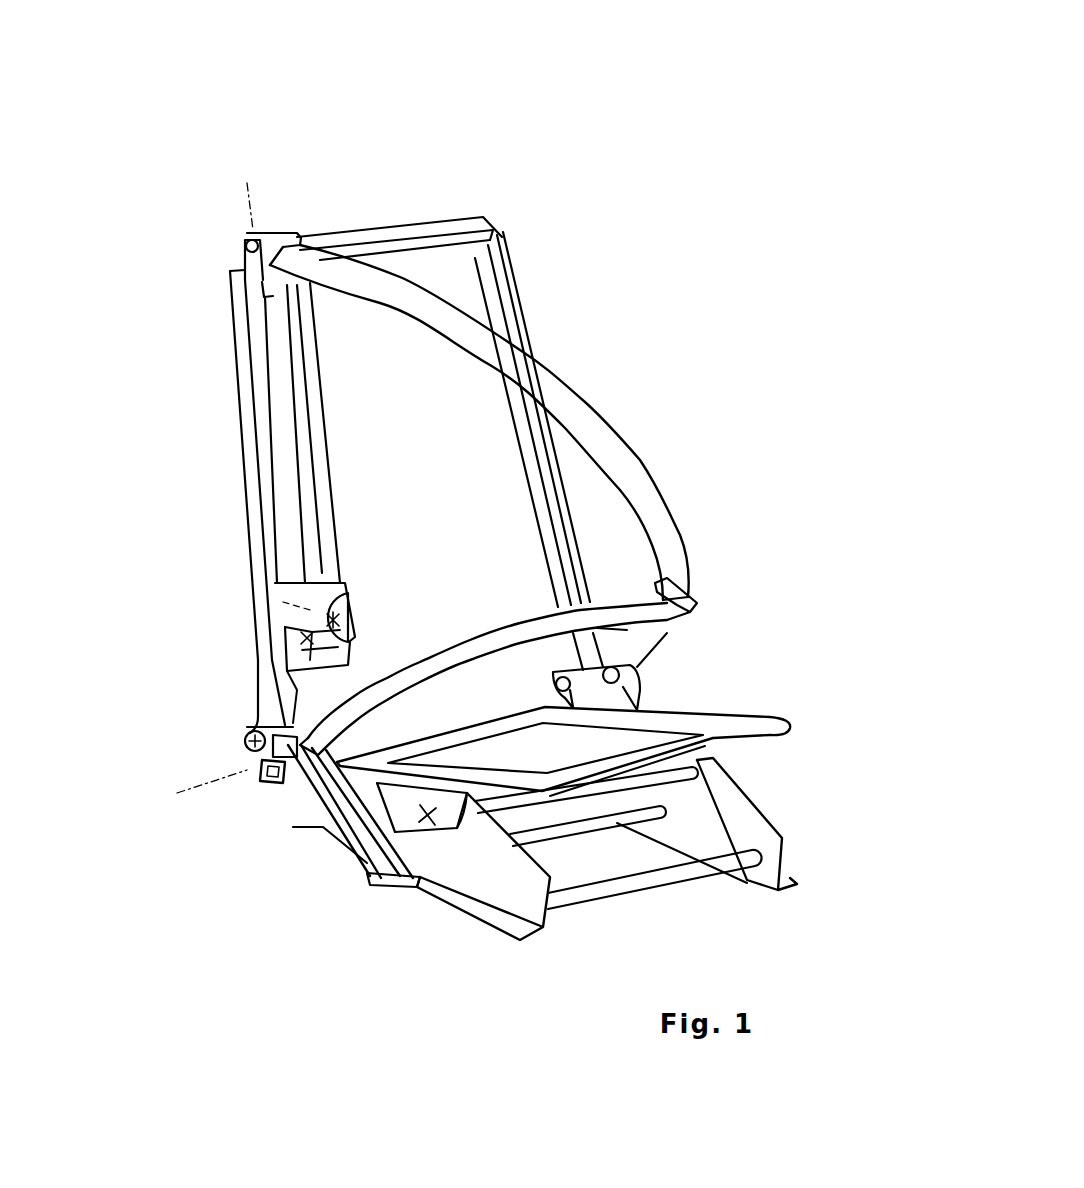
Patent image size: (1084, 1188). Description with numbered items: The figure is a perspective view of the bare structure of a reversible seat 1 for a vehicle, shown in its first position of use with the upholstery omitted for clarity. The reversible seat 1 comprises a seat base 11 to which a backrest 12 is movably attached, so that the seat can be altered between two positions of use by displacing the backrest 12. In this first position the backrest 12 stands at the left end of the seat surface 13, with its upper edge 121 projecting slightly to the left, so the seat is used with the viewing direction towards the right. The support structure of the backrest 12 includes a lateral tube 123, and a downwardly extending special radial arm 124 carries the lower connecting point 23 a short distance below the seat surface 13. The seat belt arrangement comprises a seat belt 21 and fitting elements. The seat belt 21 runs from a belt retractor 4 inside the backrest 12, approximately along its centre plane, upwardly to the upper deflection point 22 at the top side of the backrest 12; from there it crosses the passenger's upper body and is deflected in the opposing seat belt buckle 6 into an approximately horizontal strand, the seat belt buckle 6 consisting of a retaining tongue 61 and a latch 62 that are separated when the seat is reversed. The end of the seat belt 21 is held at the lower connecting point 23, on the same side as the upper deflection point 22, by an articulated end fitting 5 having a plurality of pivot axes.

The reversible seat 1 is at (245, 88).
The seat base 11 is at (782, 814).
The backrest 12 is at (545, 299).
The seat surface 13 is at (767, 728).
The upper edge 121 is at (422, 230).
The lateral tube 123 is at (245, 417).
The radial arm 124 is at (246, 734).
The seat belt 21 is at (560, 395).
The upper deflection point 22 is at (223, 241).
The lower connecting point 23 is at (251, 810).
The belt retractor 4 is at (275, 585).
The articulated end fitting 5 is at (256, 765).
The seat belt buckle 6 is at (830, 567).
The retaining tongue 61 is at (663, 618).
The latch 62 is at (673, 637).